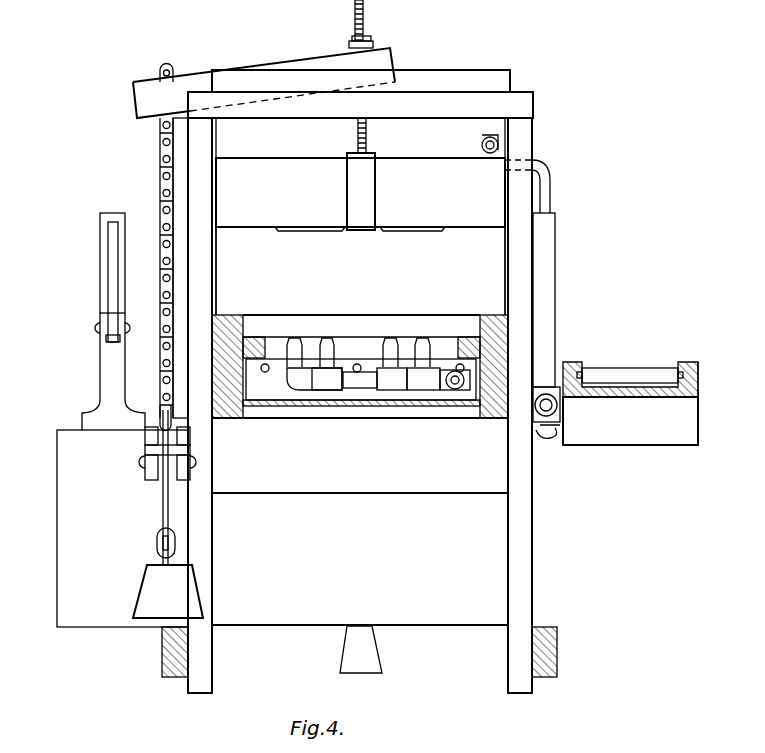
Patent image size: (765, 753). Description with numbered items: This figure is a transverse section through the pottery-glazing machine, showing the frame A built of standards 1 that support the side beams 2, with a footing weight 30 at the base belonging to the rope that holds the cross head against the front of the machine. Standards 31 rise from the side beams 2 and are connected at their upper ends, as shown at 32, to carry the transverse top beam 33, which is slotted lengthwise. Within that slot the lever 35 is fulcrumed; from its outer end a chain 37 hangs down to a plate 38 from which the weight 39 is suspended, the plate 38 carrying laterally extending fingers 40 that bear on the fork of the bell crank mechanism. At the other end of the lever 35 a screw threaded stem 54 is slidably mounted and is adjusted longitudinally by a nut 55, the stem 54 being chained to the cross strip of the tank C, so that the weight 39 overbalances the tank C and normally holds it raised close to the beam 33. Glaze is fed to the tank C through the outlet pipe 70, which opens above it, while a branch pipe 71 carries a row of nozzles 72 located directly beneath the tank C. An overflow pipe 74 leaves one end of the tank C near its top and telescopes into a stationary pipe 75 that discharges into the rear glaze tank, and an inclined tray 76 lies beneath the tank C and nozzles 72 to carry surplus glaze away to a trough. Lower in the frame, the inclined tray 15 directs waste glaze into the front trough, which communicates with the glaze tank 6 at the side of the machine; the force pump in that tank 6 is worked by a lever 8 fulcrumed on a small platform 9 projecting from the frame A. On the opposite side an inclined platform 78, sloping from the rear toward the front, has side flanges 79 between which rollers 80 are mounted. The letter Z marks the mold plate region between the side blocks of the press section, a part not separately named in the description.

The standards 1 is at (210, 660).
The side beams 2 is at (240, 406).
The glaze tank 6 is at (73, 514).
The lever 8 is at (113, 293).
The platform 9 is at (82, 413).
The inclined tray 15 is at (403, 488).
The weight 30 is at (361, 649).
The standards 31 is at (205, 262).
The connection of standards 32 is at (496, 106).
The top beam 33 is at (463, 71).
The lever 35 is at (272, 72).
The chain 37 is at (160, 173).
The plate 38 is at (167, 489).
The weight 39 is at (168, 591).
The fingers 40 is at (148, 452).
The screw threaded stem 54 is at (367, 23).
The nut 55 is at (355, 43).
The outlet pipe 70 is at (482, 146).
The branch pipe 71 is at (363, 388).
The nozzles 72 is at (334, 352).
The overflow pipe 74 is at (550, 184).
The stationary pipe 75 is at (556, 290).
The inclined tray 76 is at (438, 402).
The inclined platform 78 is at (637, 410).
The side flanges 79 is at (700, 372).
The rollers 80 is at (629, 378).
The frame A is at (508, 658).
The tank C is at (360, 192).
The mold plate Z is at (492, 412).